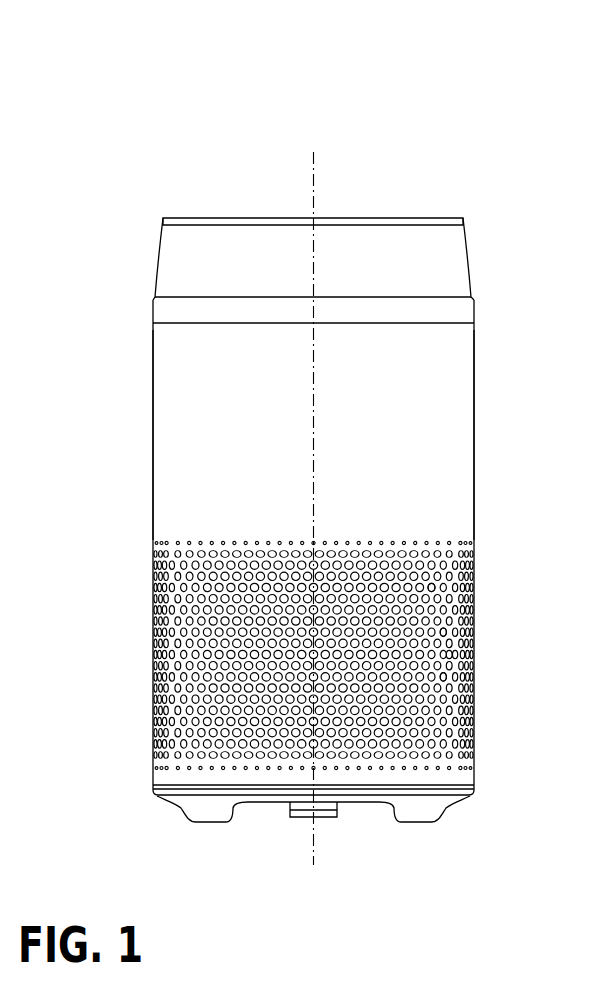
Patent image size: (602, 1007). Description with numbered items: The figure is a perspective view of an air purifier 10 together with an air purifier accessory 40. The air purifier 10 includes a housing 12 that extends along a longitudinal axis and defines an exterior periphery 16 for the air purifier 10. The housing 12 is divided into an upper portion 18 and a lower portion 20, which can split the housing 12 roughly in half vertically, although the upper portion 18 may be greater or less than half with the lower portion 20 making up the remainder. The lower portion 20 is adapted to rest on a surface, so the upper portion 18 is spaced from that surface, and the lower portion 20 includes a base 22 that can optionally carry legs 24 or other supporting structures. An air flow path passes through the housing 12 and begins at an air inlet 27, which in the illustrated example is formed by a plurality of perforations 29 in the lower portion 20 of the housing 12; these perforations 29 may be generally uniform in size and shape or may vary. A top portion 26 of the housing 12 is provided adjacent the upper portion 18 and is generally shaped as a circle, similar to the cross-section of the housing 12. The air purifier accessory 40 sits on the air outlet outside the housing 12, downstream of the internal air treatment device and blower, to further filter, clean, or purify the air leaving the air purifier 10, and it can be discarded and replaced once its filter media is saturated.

The air purifier 10 is at (138, 182).
The housing 12 is at (475, 458).
The exterior periphery 16 is at (222, 493).
The upper portion 18 is at (173, 333).
The lower portion 20 is at (153, 635).
The base 22 is at (263, 803).
The legs 24 is at (423, 810).
The top portion 26 is at (153, 302).
The air inlet 27 is at (430, 587).
The perforations 29 is at (450, 677).
The air purifier accessory 40 is at (372, 218).